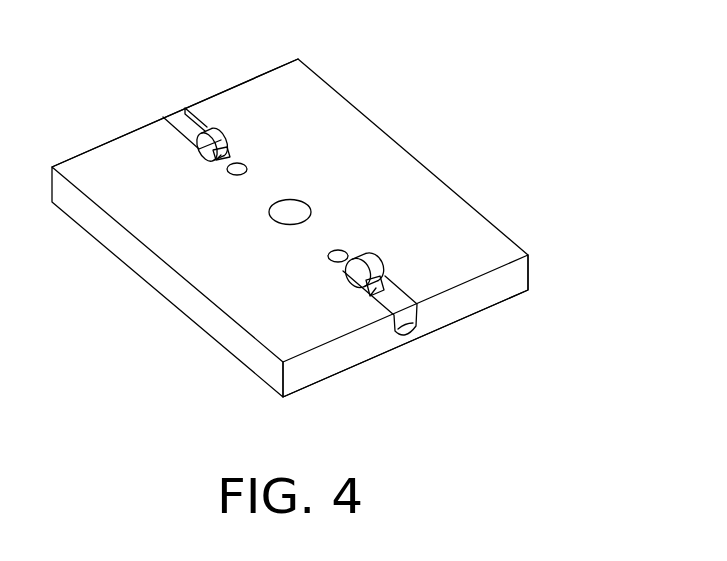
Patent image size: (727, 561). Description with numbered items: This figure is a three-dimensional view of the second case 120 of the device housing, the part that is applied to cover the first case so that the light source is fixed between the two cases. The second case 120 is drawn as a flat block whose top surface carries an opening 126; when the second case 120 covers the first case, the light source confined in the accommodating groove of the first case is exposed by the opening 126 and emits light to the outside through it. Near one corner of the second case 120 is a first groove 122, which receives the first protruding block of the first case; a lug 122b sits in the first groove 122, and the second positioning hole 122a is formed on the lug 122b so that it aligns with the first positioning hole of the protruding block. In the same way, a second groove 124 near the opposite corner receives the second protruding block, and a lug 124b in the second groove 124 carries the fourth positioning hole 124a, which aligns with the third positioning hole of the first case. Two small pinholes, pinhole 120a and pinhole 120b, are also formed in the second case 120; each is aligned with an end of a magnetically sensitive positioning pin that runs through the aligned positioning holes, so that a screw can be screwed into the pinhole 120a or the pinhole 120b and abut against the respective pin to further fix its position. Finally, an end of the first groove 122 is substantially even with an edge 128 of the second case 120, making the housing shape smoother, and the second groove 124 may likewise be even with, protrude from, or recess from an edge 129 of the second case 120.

The second case 120 is at (420, 163).
The pinhole 120a is at (337, 242).
The pinhole 120b is at (250, 167).
The first groove 122 is at (410, 320).
The second positioning hole 122a is at (388, 288).
The lug 122b is at (375, 262).
The second groove 124 is at (173, 120).
The fourth positioning hole 124a is at (240, 145).
The lug 124b is at (211, 153).
The opening 126 is at (292, 203).
The edge 128 is at (522, 279).
The edge 129 is at (111, 137).